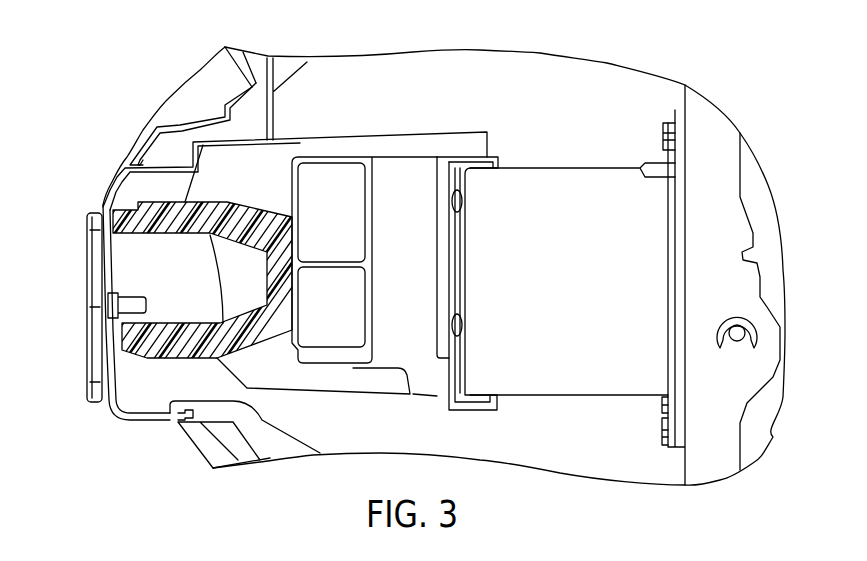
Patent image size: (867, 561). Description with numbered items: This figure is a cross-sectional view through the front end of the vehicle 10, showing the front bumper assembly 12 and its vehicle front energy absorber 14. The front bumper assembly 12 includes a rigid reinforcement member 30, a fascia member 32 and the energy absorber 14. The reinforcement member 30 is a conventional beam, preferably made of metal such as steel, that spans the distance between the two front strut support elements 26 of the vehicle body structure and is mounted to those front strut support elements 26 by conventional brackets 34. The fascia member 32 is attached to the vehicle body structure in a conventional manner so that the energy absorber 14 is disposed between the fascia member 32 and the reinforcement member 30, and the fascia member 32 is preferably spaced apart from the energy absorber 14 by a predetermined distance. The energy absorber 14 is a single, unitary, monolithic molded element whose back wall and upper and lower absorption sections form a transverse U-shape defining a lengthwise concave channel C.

The vehicle 10 is at (640, 32).
The front bumper assembly 12 is at (113, 180).
The energy absorber 14 is at (257, 330).
The front strut support elements 26 is at (722, 168).
The reinforcement member 30 is at (403, 178).
The fascia member 32 is at (103, 204).
The brackets 34 is at (567, 202).
The concave channel C is at (167, 323).